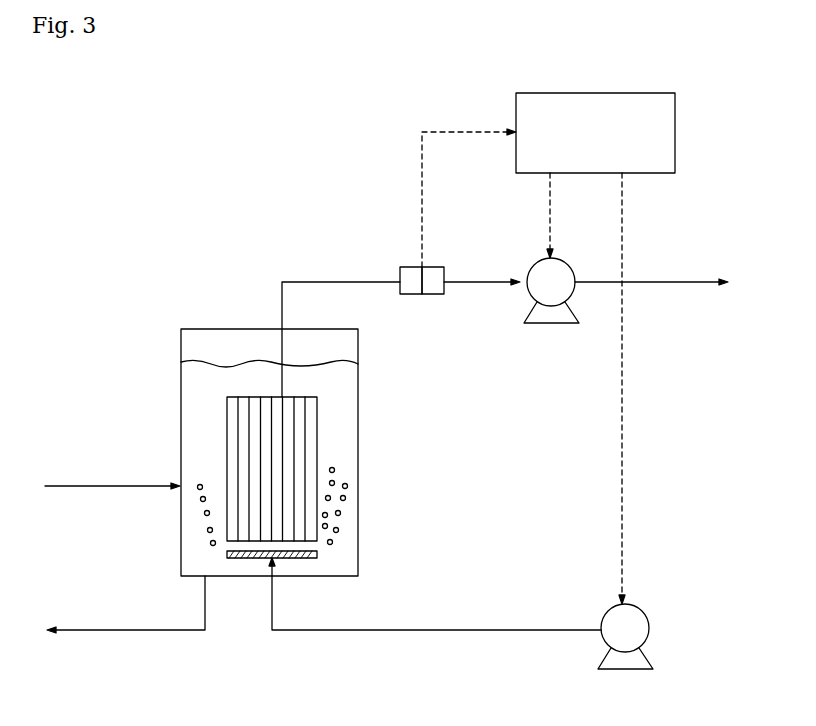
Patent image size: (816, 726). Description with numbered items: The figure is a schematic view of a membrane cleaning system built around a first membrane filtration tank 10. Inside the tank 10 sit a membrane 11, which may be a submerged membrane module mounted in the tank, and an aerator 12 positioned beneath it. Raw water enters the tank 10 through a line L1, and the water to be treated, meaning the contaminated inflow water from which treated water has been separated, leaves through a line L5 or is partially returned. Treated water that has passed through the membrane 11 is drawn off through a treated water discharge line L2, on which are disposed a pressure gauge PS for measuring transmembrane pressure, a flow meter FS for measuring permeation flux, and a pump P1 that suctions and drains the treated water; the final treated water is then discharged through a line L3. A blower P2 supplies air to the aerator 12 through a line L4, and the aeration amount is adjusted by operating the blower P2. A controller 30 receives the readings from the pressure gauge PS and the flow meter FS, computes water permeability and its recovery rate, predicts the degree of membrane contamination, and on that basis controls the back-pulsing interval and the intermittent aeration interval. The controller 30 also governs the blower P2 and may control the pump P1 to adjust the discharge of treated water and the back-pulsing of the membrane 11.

The first membrane filtration tank 10 is at (180, 538).
The membrane 11 is at (227, 420).
The aerator 12 is at (254, 559).
The controller 30 is at (675, 120).
The line L1 is at (113, 483).
The treated water discharge line L2 is at (483, 285).
The line L3 is at (696, 278).
The air supply line L4 is at (352, 632).
The line L5 is at (126, 632).
The pump P1 is at (570, 264).
The blower P2 is at (648, 620).
The pressure gauge PS is at (407, 259).
The flow meter FS is at (440, 259).